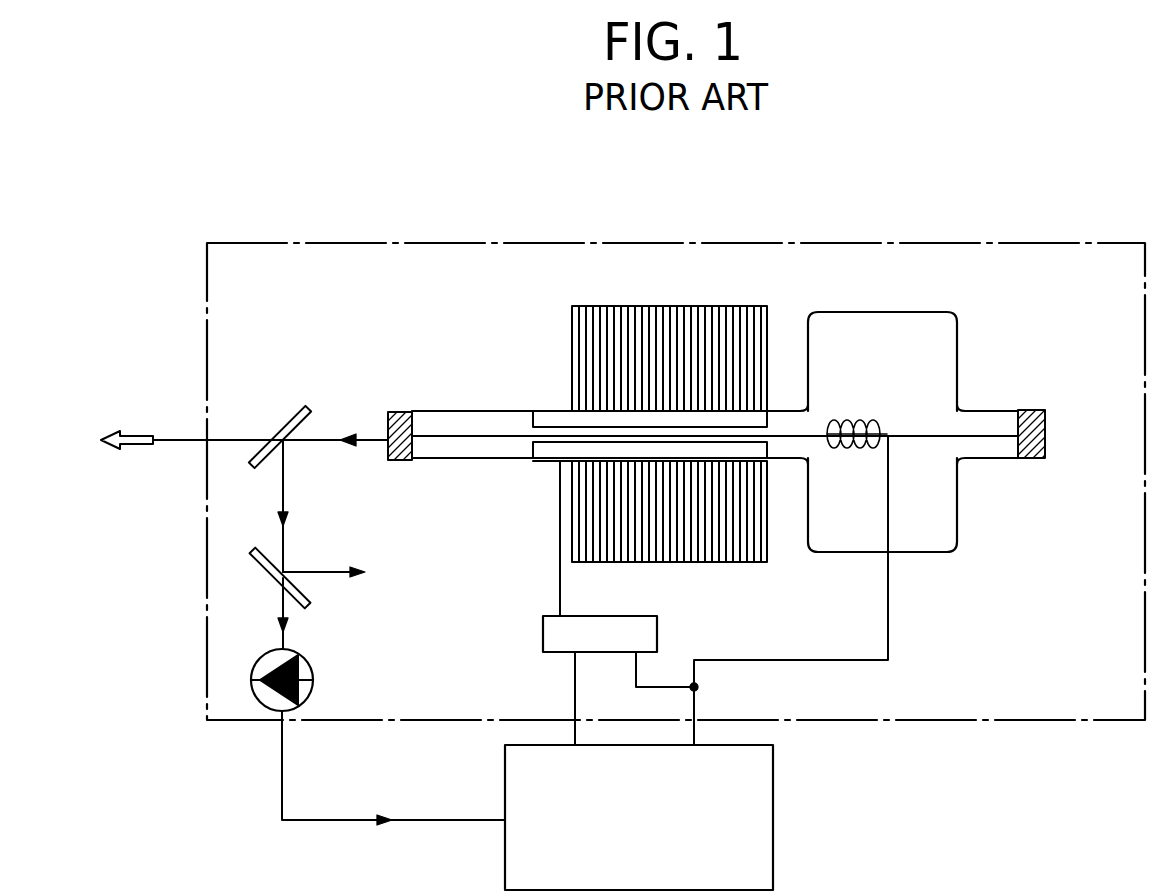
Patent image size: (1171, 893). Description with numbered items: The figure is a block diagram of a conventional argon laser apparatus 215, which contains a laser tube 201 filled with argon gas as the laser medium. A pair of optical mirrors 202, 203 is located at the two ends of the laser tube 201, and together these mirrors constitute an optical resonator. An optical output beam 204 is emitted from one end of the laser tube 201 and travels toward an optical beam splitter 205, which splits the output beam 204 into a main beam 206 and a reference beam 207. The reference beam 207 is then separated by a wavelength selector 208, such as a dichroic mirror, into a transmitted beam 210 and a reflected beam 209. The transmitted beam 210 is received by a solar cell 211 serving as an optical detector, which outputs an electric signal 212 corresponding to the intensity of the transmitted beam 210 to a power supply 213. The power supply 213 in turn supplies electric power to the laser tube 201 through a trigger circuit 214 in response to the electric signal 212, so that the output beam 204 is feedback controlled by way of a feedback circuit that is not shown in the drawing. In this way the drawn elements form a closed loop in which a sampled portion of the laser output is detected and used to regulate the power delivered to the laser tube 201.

The laser tube 201 is at (962, 347).
The optical mirror 202 is at (1032, 410).
The optical mirror 203 is at (400, 412).
The optical output beam 204 is at (330, 430).
The optical beam splitter 205 is at (280, 418).
The main beam 206 is at (172, 432).
The reference beam 207 is at (283, 493).
The wavelength selector 208 is at (255, 560).
The reflected beam 209 is at (320, 570).
The transmitted beam 210 is at (283, 605).
The solar cell 211 is at (313, 663).
The electric signal 212 is at (362, 825).
The power supply 213 is at (765, 822).
The trigger circuit 214 is at (543, 637).
The argon laser apparatus 215 is at (685, 243).